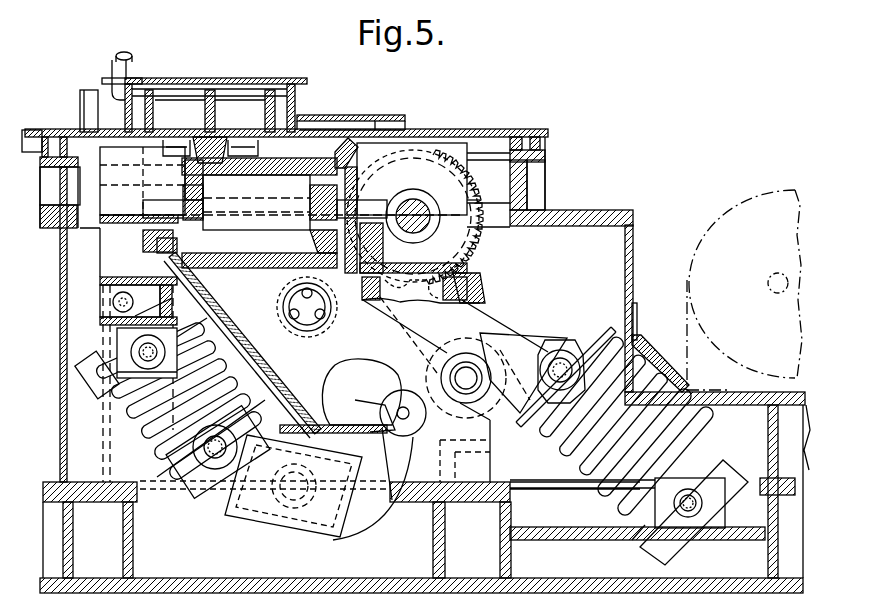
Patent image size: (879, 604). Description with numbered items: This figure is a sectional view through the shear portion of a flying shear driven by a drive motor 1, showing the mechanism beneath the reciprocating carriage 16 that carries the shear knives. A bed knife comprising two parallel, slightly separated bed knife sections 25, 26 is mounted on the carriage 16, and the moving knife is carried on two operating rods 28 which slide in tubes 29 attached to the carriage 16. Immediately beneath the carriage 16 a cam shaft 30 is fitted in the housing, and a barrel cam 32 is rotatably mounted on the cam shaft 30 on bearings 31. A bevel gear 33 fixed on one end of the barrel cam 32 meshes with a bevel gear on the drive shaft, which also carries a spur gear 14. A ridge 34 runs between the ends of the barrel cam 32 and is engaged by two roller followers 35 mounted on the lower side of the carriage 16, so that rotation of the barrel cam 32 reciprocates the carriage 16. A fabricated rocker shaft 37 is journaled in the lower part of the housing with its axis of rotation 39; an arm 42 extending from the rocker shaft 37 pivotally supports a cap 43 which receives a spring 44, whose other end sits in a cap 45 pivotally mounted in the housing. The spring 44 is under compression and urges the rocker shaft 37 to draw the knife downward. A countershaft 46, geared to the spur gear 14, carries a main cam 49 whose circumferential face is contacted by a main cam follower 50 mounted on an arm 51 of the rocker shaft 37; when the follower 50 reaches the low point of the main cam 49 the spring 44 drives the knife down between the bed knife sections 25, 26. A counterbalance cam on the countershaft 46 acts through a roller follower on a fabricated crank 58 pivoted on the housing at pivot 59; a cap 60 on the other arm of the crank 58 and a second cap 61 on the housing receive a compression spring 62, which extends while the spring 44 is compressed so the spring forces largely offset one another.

The drive motor 1 is at (706, 219).
The spur gear 14 is at (483, 238).
The reciprocating carriage 16 is at (205, 78).
The bed knife section 25 is at (138, 79).
The bed knife section 26 is at (113, 78).
The operating rods 28 is at (131, 55).
The tubes 29 is at (100, 250).
The cam shaft 30 is at (180, 182).
The bearings 31 is at (300, 206).
The barrel cam 32 is at (222, 266).
The bevel gear 33 is at (345, 140).
The ridge 34 is at (213, 142).
The roller followers 35 is at (165, 150).
The rocker shaft 37 is at (324, 452).
The axis of rotation 39 is at (298, 528).
The arm 42 is at (245, 508).
The cap 43 is at (200, 502).
The spring 44 is at (148, 428).
The cap 45 is at (95, 362).
The countershaft 46 is at (322, 320).
The main cam 49 is at (375, 414).
The main cam follower 50 is at (400, 390).
The arm 51 is at (374, 530).
The fabricated crank 58 is at (482, 315).
The pivot 59 is at (470, 378).
The cap 60 is at (610, 332).
The second cap 61 is at (670, 540).
The compression spring 62 is at (680, 431).